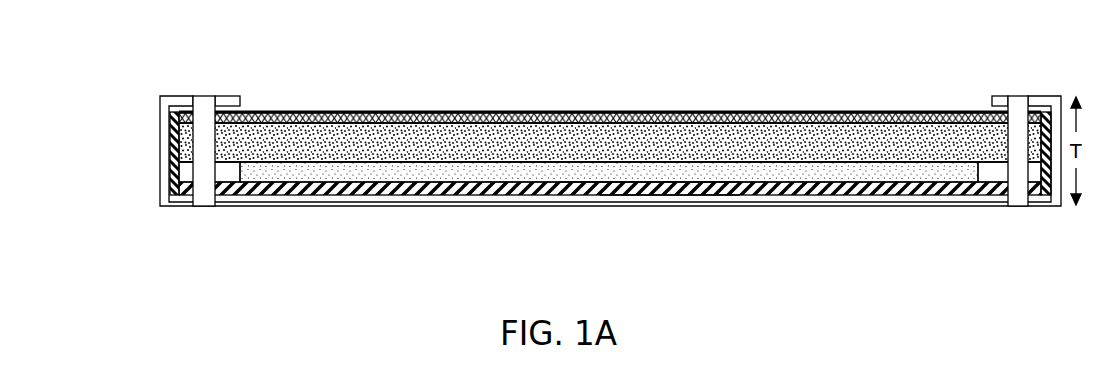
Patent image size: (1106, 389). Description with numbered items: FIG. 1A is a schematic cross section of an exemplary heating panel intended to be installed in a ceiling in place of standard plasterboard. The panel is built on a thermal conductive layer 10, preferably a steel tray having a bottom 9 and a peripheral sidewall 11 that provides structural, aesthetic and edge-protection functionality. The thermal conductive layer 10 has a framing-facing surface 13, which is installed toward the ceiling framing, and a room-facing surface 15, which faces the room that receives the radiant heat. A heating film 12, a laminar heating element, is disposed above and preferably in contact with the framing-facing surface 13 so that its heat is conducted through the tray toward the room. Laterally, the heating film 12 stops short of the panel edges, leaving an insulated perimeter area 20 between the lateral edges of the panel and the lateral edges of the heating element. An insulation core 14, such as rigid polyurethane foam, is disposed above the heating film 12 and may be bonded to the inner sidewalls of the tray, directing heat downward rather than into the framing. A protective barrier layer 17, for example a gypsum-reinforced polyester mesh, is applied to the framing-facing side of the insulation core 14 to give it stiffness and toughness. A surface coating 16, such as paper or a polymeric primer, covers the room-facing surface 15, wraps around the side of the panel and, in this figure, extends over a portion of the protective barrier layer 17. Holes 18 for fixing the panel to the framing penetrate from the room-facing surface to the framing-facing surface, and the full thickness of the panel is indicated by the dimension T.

The bottom 9 is at (714, 182).
The thermal conductive layer 10 is at (387, 188).
The peripheral sidewall 11 is at (170, 152).
The heating film 12 is at (313, 170).
The framing-facing surface 13 is at (644, 182).
The insulation core 14 is at (455, 140).
The room-facing surface 15 is at (669, 195).
The surface coating 16 is at (232, 95).
The protective barrier layer 17 is at (548, 111).
The holes 18 is at (203, 95).
The insulated perimeter area 20 is at (232, 168).